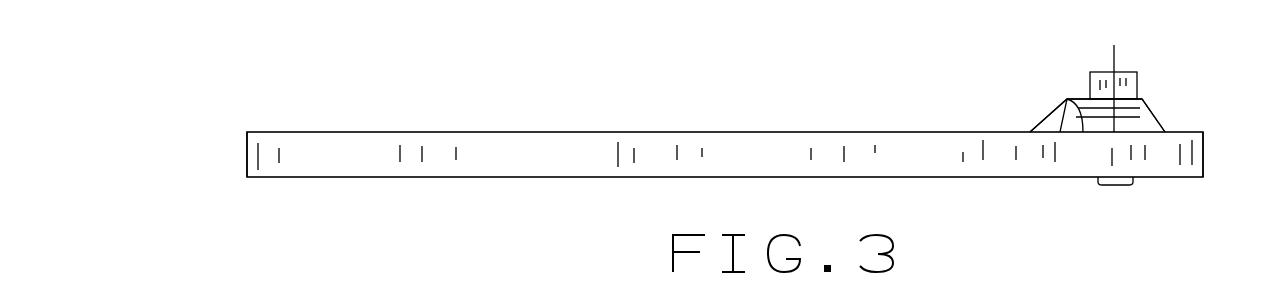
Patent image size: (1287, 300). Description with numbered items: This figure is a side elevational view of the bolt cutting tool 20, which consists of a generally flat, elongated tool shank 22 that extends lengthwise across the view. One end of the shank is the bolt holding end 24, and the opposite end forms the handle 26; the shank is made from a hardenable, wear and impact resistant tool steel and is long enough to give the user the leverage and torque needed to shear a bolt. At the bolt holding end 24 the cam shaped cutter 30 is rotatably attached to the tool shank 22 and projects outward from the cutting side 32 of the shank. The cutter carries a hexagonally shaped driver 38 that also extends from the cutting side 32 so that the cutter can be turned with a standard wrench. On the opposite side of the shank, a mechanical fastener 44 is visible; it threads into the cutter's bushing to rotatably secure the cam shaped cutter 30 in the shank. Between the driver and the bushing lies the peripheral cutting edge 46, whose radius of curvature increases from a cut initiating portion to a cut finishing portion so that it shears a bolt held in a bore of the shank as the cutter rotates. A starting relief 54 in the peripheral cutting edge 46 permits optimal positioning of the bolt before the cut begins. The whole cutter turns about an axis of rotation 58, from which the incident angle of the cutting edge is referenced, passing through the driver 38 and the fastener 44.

The bolt cutting tool 20 is at (722, 118).
The tool shank 22 is at (592, 132).
The bolt holding end 24 is at (1203, 160).
The handle 26 is at (247, 150).
The cam shaped cutter 30 is at (1045, 105).
The cutting side 32 is at (905, 132).
The hexagonally shaped driver 38 is at (1125, 72).
The mechanical fastener 44 is at (1133, 187).
The peripheral cutting edge 46 is at (1153, 112).
The starting relief 54 is at (1083, 132).
The axis of rotation 58 is at (1117, 218).